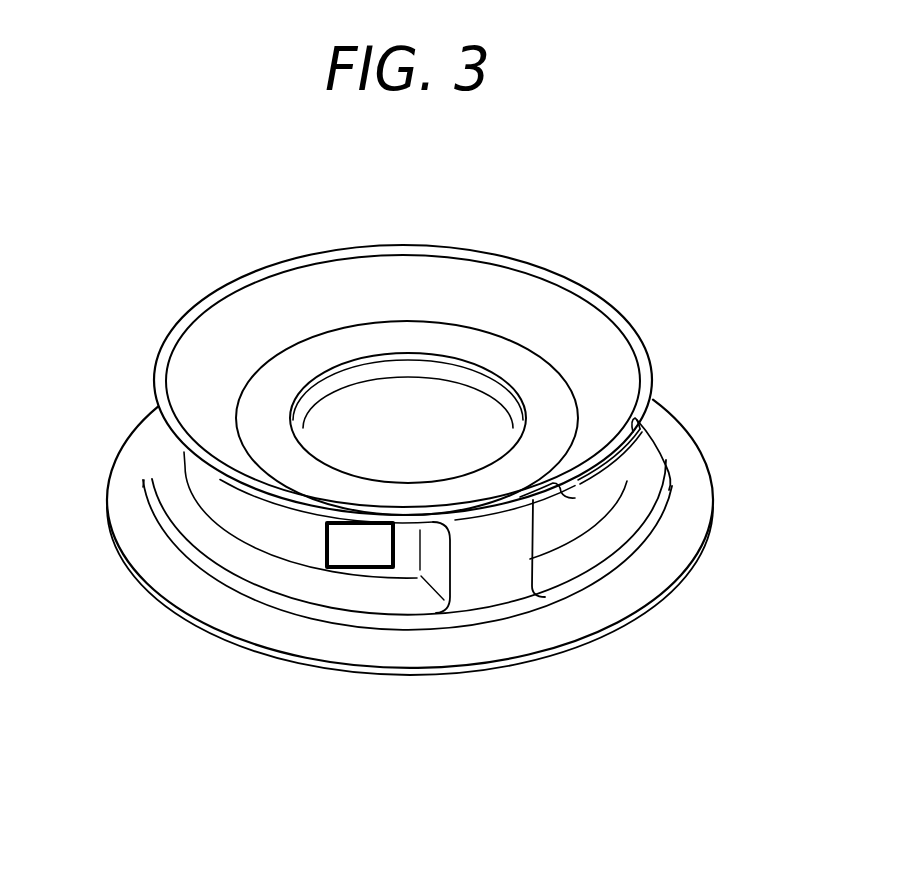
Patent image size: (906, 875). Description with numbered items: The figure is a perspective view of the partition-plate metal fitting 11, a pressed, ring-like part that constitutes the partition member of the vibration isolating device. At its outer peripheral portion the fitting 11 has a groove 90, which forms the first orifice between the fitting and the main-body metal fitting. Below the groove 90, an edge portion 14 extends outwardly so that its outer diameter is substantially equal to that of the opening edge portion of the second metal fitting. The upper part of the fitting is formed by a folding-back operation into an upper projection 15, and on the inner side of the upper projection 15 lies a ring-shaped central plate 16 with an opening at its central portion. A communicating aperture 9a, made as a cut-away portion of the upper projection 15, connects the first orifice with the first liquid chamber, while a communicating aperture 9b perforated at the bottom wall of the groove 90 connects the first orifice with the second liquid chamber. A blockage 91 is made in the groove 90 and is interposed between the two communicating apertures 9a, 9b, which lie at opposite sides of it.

The partition-plate metal fitting 11 is at (628, 262).
The edge portion 14 is at (478, 643).
The upper projection 15 is at (628, 330).
The ring-shaped central plate 16 is at (270, 393).
The communicating aperture 9a is at (660, 463).
The communicating aperture 9b is at (357, 557).
The groove 90 is at (212, 497).
The blockage 91 is at (517, 537).